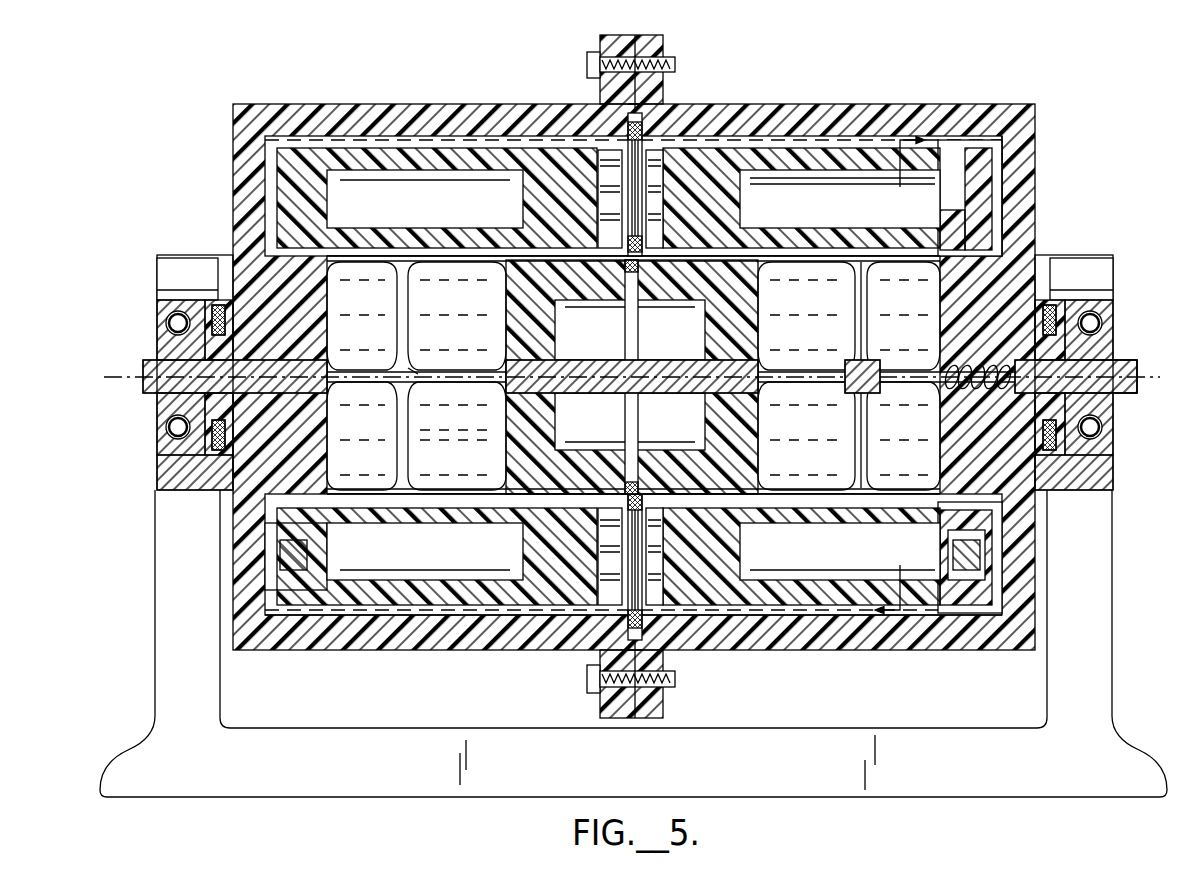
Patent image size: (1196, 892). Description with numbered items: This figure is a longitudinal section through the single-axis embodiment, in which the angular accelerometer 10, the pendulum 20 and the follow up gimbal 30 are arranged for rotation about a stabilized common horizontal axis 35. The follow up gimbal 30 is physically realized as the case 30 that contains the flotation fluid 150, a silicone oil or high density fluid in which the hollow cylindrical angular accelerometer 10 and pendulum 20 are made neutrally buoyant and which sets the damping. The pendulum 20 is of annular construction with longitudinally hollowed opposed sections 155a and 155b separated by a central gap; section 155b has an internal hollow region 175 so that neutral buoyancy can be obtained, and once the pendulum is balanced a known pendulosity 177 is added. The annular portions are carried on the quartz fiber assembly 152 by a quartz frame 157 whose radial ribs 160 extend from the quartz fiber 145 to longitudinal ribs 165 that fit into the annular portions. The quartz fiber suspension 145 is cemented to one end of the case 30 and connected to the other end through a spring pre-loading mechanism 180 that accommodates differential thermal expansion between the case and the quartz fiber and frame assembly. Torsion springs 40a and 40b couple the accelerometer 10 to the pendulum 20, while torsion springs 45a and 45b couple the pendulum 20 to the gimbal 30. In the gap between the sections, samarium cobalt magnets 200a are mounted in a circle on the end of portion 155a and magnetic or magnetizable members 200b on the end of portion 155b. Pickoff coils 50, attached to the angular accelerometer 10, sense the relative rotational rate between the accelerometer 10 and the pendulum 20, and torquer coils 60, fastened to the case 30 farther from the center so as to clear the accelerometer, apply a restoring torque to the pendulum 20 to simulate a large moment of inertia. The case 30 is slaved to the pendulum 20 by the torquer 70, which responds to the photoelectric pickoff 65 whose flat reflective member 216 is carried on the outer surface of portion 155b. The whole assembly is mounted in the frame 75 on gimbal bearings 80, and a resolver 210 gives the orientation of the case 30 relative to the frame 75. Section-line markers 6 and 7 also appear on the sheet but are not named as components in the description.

The pickoff 65 is at (997, 100).
The flat reflective member 216 is at (1037, 122).
The follow up gimbal 30 is at (474, 641).
The annular portion 155a is at (396, 152).
The annular portion 155b is at (902, 185).
The internal hollow region 175 is at (800, 187).
The samarium cobalt magnets 200a is at (608, 200).
The magnetic or magnetizable members 200b is at (660, 193).
The torquer coils 60 is at (652, 118).
The gap 7 is at (627, 117).
The angular accelerometer 10 is at (967, 73).
The section line 6 is at (900, 375).
The resolver 210 is at (240, 322).
The torquer 70 is at (1030, 322).
The gimbal bearings 80 is at (1103, 323).
The stabilized common horizontal axis 35 is at (104, 377).
The quartz fiber assembly 152 is at (1143, 380).
The quartz fiber 145 is at (426, 355).
The torsion spring 40a is at (438, 375).
The torsion spring 40b is at (784, 372).
The torsion spring 45a is at (338, 373).
The torsion spring 45b is at (900, 372).
The longitudinal ribs 165 is at (774, 254).
The flotation fluid 150 is at (470, 462).
The ribs 160 is at (866, 430).
The quartz frame 157 is at (872, 466).
The spring pre-loading mechanism 180 is at (945, 383).
The pendulosity 177 is at (290, 553).
The frame 75 is at (1098, 576).
The pendulum 20 is at (723, 592).
The pickoff coils 50 is at (618, 617).